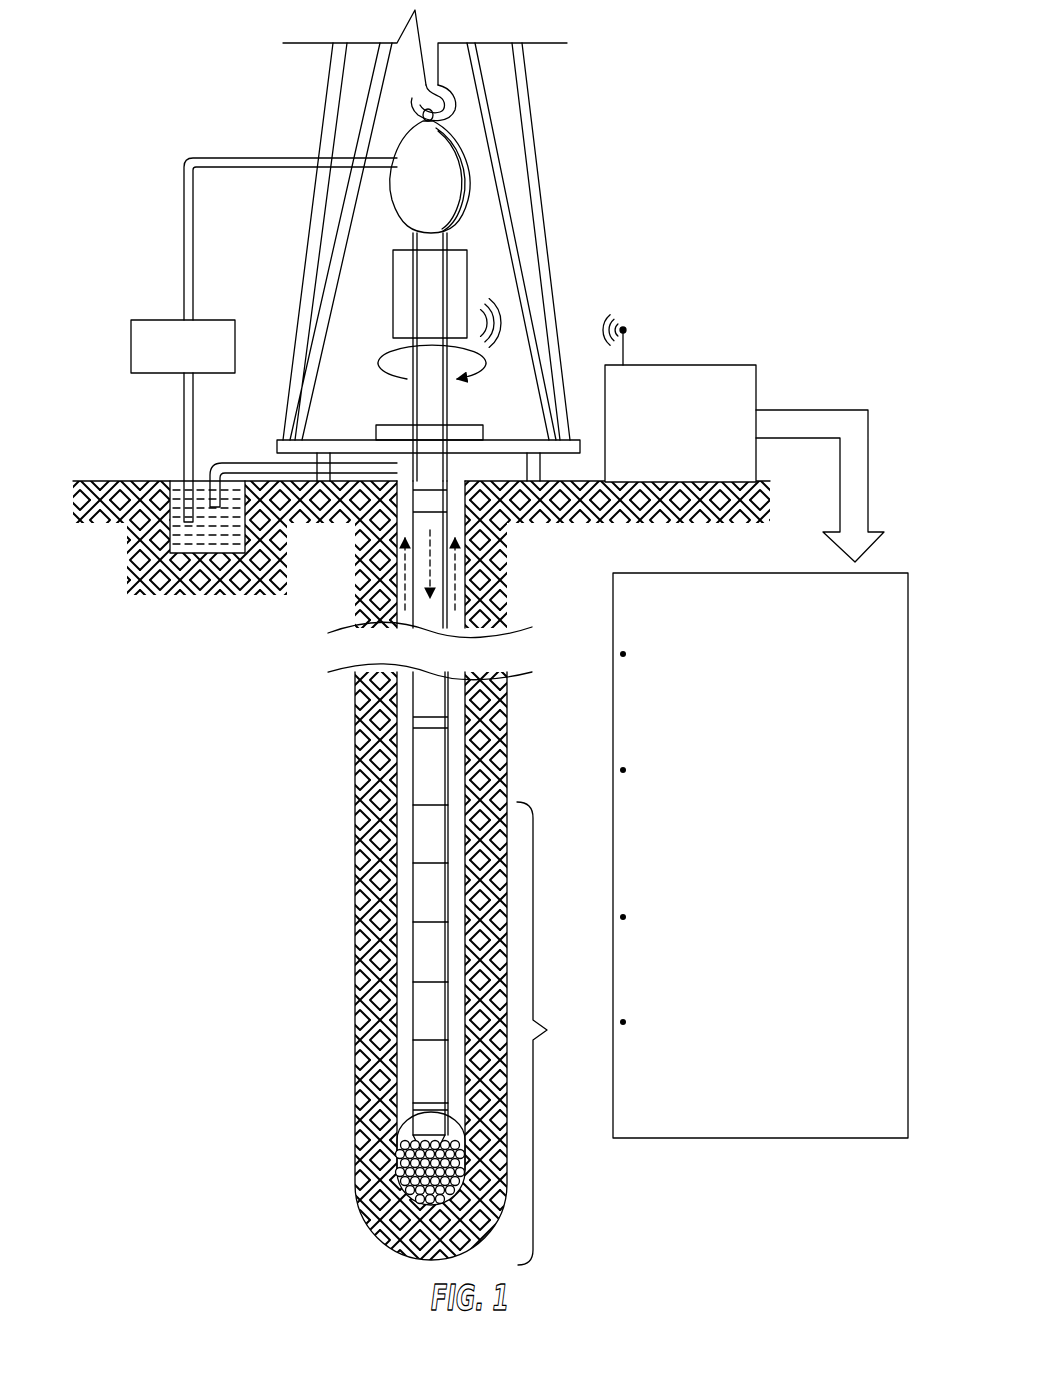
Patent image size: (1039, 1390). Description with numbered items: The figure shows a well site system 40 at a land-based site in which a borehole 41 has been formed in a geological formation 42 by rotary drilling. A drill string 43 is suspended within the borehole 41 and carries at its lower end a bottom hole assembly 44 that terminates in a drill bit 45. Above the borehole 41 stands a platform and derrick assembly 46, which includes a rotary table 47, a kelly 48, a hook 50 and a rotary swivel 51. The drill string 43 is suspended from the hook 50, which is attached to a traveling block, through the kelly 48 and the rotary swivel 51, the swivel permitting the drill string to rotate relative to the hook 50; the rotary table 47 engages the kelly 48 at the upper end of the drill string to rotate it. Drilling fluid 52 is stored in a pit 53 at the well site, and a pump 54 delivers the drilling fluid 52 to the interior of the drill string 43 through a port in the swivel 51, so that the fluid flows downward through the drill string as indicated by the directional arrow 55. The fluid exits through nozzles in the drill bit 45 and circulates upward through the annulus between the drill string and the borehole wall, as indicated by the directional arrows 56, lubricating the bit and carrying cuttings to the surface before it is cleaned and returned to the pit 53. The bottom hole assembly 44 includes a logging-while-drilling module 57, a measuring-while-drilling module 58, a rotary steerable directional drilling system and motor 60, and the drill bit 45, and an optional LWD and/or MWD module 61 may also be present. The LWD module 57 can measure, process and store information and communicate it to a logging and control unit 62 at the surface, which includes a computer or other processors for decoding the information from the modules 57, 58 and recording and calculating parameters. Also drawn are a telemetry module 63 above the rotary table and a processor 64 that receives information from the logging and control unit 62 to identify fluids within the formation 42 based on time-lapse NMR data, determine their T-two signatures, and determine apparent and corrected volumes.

The well site system 40 is at (716, 88).
The borehole 41 is at (459, 486).
The geological formation 42 is at (546, 725).
The drill string 43 is at (428, 476).
The bottom hole assembly 44 is at (552, 1033).
The drill bit 45 is at (410, 1143).
The platform and derrick assembly 46 is at (563, 126).
The rotary table 47 is at (460, 428).
The kelly 48 is at (427, 398).
The hook 50 is at (440, 70).
The rotary swivel 51 is at (425, 197).
The drilling fluid 52 is at (205, 548).
The pit 53 is at (173, 477).
The pump 54 is at (150, 376).
The directional arrow 55 is at (432, 567).
The directional arrows 56 is at (398, 580).
The logging-while-drilling module 57 is at (423, 883).
The measuring-while-drilling module 58 is at (415, 952).
The rotary steerable directional drilling system and motor 60 is at (423, 1068).
The optional LWD and/or MWD module 61 is at (423, 1012).
The logging and control unit 62 is at (700, 365).
The telemetry module 63 is at (470, 280).
The processor 64 is at (725, 573).